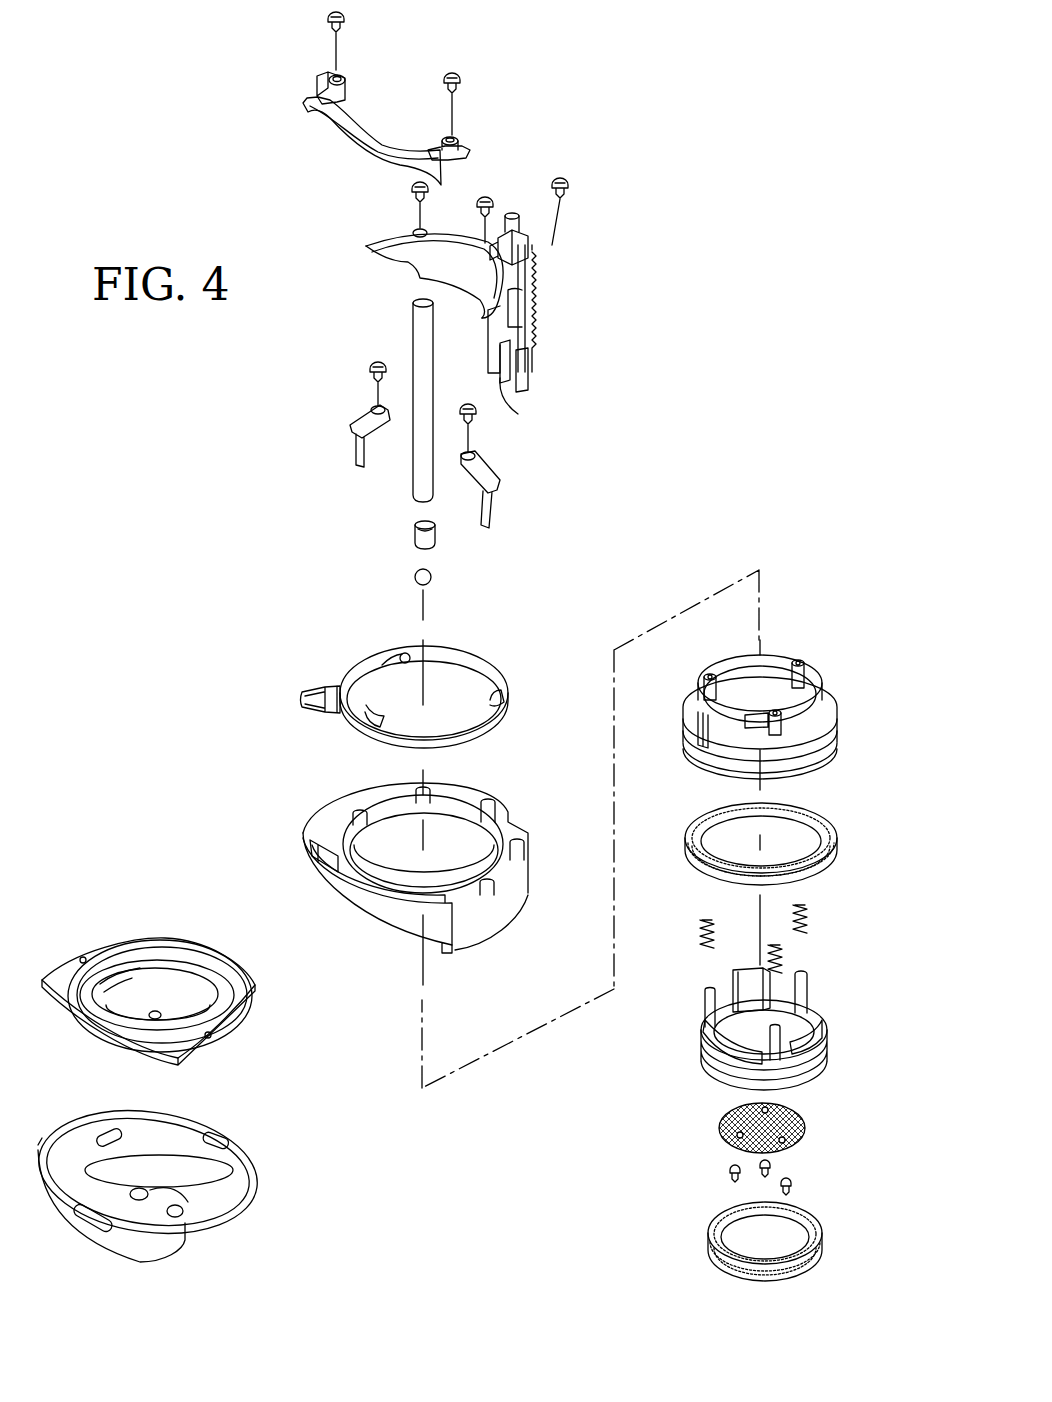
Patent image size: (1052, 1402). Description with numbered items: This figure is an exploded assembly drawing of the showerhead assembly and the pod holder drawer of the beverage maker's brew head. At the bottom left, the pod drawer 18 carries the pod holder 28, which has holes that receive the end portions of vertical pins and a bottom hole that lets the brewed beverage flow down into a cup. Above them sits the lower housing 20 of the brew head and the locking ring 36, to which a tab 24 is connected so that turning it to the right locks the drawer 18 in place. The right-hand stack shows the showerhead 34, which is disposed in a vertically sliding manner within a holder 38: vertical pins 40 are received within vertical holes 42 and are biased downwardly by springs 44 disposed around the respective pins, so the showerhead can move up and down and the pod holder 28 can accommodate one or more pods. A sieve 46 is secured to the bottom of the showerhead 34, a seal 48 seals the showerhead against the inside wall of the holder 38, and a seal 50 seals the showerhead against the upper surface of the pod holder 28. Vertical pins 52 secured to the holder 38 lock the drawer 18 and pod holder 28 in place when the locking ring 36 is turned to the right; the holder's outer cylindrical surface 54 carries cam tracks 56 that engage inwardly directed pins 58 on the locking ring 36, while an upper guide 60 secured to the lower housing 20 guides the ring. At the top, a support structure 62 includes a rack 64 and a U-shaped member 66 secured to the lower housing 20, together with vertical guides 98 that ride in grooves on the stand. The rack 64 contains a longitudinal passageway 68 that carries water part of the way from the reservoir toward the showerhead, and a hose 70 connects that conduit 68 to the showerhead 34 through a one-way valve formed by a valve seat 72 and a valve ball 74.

The pod drawer 18 is at (257, 1168).
The lower housing 20 is at (482, 927).
The tab 24 is at (300, 700).
The pod holder 28 is at (148, 932).
The showerhead 34 is at (748, 1027).
The locking ring 36 is at (389, 676).
The holder 38 is at (761, 684).
The vertical pins 40 is at (694, 1048).
The vertical holes 42 is at (706, 677).
The springs 44 is at (700, 935).
The sieve 46 is at (805, 1126).
The seal 48 is at (708, 1248).
The seal 50 is at (830, 836).
The vertical pins 52 is at (350, 452).
The outer cylindrical surface 54 is at (700, 730).
The cam tracks 56 is at (735, 765).
The inwardly directed pins 58 is at (395, 656).
The upper guide 60 is at (358, 150).
The support structure 62 is at (574, 272).
The rack 64 is at (540, 316).
The U-shaped member 66 is at (392, 258).
The longitudinal passageway 68 is at (515, 210).
The hose 70 is at (418, 340).
The valve seat 72 is at (413, 535).
The valve ball 74 is at (432, 577).
The vertical guides 98 is at (518, 414).